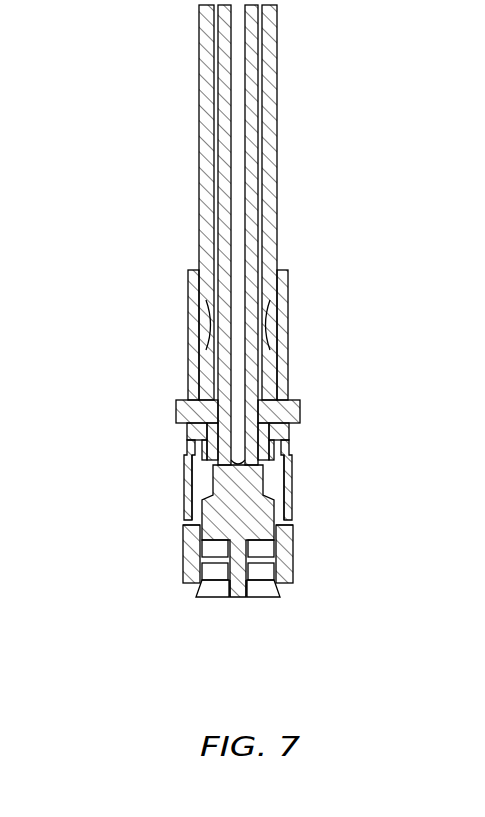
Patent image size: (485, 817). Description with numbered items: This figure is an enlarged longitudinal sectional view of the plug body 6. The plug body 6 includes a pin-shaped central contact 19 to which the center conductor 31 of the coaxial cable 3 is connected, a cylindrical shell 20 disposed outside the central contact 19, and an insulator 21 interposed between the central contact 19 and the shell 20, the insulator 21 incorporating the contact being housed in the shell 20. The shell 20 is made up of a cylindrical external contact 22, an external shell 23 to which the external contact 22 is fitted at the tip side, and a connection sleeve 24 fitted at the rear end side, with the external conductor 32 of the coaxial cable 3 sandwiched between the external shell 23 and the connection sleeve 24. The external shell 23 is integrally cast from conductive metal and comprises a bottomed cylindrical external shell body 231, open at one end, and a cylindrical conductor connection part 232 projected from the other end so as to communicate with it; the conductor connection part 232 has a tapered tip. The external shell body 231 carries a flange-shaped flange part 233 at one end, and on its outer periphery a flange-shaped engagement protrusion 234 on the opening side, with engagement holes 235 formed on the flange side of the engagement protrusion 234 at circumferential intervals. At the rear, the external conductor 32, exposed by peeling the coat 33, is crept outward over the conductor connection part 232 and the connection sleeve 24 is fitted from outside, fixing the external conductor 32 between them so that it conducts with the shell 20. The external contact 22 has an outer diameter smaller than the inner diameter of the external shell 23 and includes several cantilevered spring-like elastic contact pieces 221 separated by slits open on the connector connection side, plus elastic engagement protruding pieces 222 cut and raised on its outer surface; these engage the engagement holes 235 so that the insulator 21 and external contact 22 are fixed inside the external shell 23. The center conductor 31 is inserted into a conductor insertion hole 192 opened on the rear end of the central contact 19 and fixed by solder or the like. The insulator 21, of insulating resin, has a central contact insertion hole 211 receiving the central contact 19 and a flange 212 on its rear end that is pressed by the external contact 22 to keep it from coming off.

The coaxial cable 3 is at (229, 235).
The center conductor 31 is at (245, 80).
The external conductor 32 is at (268, 128).
The coat 33 is at (198, 152).
The plug body 6 is at (235, 346).
The connection sleeve 24 is at (287, 302).
The conductor connection part 232 is at (188, 358).
The conductor insertion hole 192 is at (176, 403).
The flange part 233 is at (298, 399).
The insulator 21 is at (286, 530).
The central contact 19 is at (298, 572).
The external contact 22 is at (241, 474).
The flange 212 is at (187, 437).
The engagement holes 235 is at (187, 475).
The elastic engagement protruding pieces 222 is at (192, 490).
The shell 20 is at (226, 587).
The external shell 23 is at (293, 553).
The contact insertion hole 211 is at (183, 527).
The engagement protrusion 234 is at (287, 528).
The external shell body 231 is at (183, 563).
The elastic contact pieces 221 is at (212, 600).